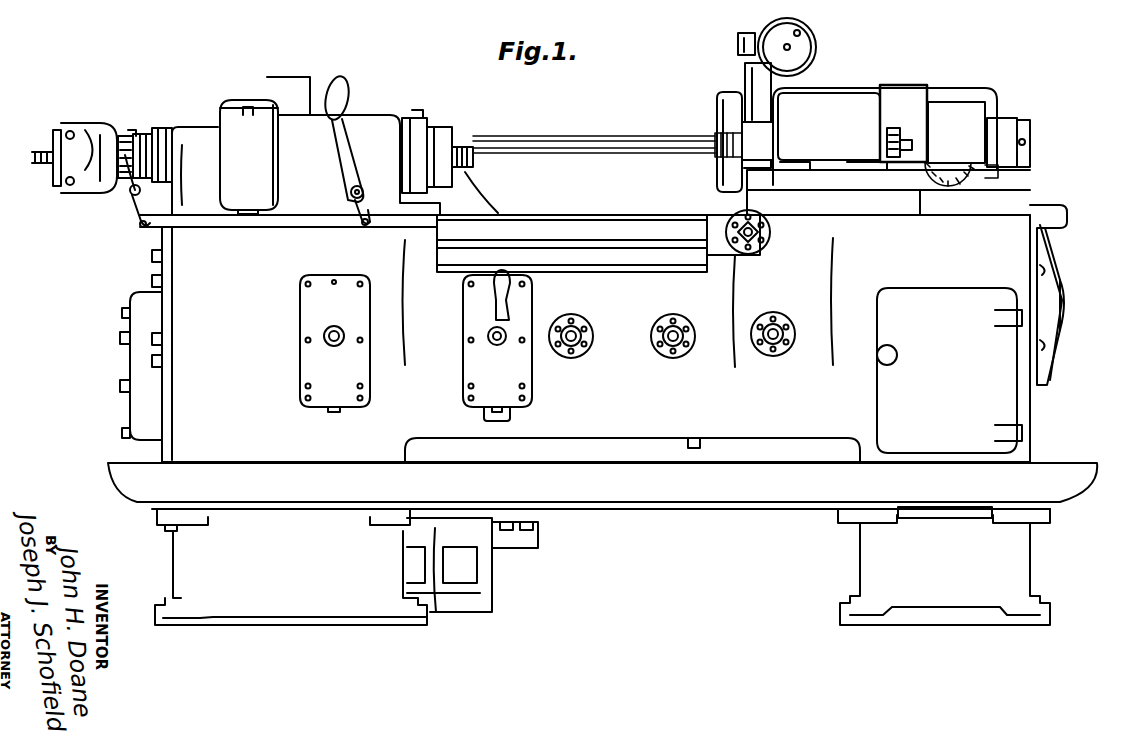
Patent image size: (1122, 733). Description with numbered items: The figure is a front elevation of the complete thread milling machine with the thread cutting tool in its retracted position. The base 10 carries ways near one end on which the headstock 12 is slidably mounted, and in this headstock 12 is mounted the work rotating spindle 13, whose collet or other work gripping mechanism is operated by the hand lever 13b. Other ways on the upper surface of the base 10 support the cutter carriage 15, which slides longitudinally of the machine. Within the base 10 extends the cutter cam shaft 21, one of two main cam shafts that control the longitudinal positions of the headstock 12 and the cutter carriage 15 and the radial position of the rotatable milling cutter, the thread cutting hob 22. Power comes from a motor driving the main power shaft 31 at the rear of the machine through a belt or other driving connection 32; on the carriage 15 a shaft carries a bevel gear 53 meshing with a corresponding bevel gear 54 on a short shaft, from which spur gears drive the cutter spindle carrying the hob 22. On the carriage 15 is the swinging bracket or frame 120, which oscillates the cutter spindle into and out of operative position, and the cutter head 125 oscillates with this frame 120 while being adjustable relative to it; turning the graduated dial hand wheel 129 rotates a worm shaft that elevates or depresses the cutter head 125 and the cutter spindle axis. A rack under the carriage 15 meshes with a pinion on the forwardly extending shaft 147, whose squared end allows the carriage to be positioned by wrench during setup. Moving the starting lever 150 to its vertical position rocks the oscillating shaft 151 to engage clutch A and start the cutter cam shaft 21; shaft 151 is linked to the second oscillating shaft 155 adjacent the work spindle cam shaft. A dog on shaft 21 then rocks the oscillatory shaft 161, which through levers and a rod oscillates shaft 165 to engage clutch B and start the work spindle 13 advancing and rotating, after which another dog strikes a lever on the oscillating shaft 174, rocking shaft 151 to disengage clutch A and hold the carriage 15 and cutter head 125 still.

The base of the machine 10 is at (172, 245).
The headstock 12 is at (372, 120).
The work rotating spindle 13 is at (143, 133).
The hand lever 13b is at (347, 165).
The cutter carriage 15 is at (817, 205).
The cutter cam shaft 21 is at (1065, 305).
The thread cutting hob 22 is at (717, 178).
The main power shaft 31 is at (562, 137).
The belt or other driving connection 32 is at (292, 80).
The bevel gear 53 is at (966, 176).
The bevel gear 54 is at (922, 178).
The swinging bracket or frame 120 is at (745, 80).
The cutter head 125 is at (832, 152).
The graduated dial hand wheel 129 is at (818, 48).
The forwardly extending shaft 147 is at (748, 245).
The starting lever 150 is at (503, 318).
The oscillating shaft 151 is at (490, 342).
The second oscillating shaft 155 is at (774, 342).
The oscillatory shaft 161 is at (571, 342).
The shaft 165 is at (326, 334).
The oscillating shaft 174 is at (674, 342).